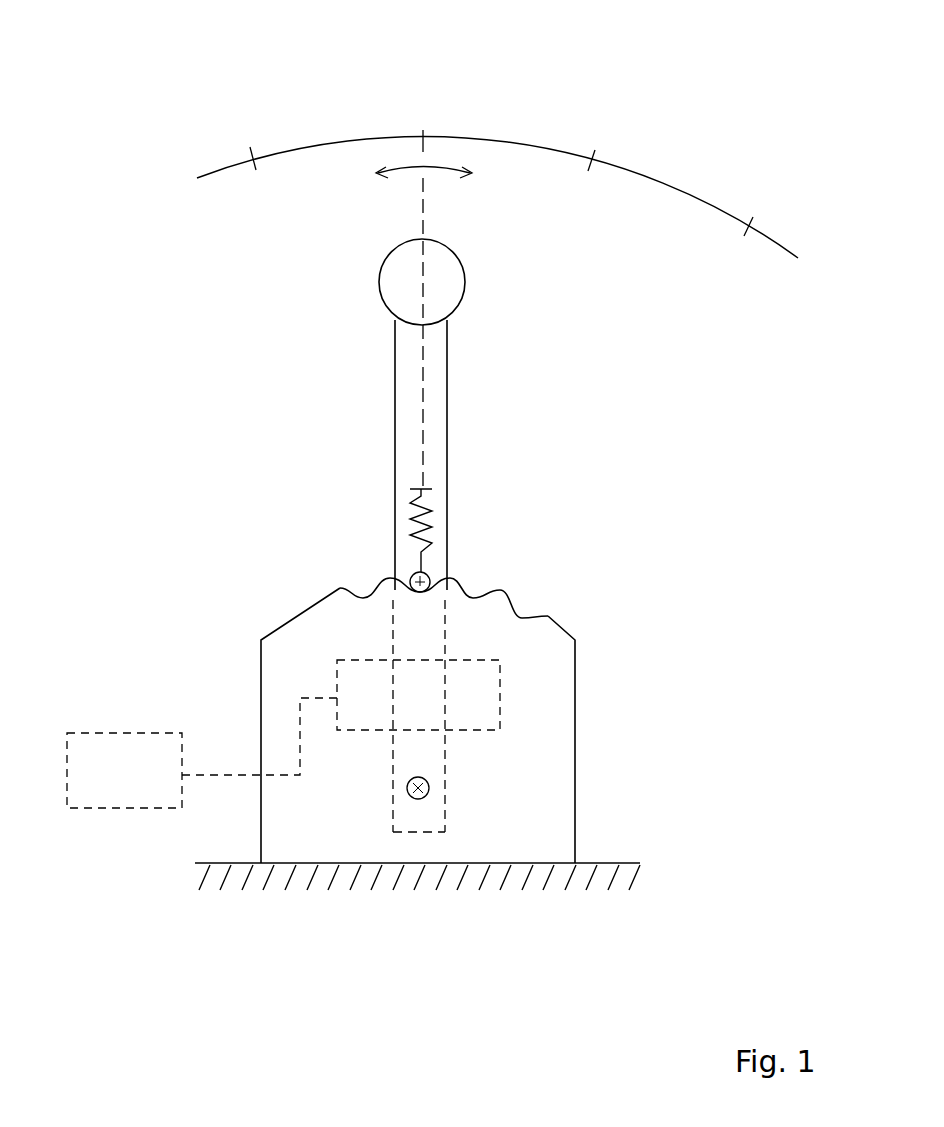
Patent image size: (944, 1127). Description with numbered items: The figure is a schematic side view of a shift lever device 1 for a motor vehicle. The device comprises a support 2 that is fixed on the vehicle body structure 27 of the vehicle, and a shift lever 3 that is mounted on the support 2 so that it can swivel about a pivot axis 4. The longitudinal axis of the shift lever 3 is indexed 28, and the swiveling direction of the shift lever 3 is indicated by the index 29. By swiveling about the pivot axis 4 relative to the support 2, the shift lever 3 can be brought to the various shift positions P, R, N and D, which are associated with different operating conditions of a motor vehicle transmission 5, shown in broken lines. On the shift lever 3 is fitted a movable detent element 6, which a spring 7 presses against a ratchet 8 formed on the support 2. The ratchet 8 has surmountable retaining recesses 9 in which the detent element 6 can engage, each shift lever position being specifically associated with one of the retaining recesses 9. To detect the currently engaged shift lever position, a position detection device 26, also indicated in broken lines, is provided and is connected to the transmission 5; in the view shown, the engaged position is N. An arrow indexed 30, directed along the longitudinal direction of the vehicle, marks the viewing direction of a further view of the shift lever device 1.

The shift lever device 1 is at (152, 82).
The support 2 is at (577, 714).
The shift lever 3 is at (445, 388).
The pivot axis 4 is at (408, 792).
The transmission 5 is at (120, 733).
The detent element 6 is at (428, 575).
The spring 7 is at (432, 512).
The ratchet 8 is at (382, 578).
The retaining recesses 9 is at (523, 618).
The position detection device 26 is at (485, 732).
The vehicle body structure 27 is at (607, 863).
The longitudinal axis of the shift lever 28 is at (422, 364).
The swiveling direction 29 is at (399, 164).
The arrow indicating viewing direction 30 is at (693, 635).